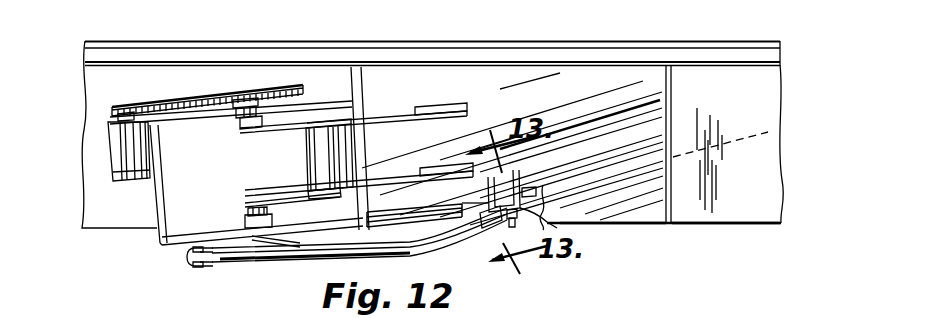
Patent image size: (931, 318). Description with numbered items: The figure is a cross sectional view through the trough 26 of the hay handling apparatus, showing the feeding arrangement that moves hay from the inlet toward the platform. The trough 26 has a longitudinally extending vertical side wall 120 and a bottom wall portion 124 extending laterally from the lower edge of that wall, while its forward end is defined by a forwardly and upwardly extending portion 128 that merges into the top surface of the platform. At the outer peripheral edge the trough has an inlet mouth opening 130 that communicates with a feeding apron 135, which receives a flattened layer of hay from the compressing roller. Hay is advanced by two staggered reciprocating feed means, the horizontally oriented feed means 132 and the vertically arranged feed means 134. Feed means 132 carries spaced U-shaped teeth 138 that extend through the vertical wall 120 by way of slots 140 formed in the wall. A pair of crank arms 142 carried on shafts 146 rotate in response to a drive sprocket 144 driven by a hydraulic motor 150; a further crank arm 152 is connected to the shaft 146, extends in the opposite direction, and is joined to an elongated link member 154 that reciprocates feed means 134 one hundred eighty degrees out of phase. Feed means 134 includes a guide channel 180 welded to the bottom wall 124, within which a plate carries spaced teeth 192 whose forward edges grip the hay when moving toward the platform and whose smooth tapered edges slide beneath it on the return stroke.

The trough 26 is at (568, 88).
The vertical side wall 120 is at (360, 91).
The bottom wall portion 124 is at (498, 240).
The forwardly and upwardly extending portion 128 is at (531, 108).
The inlet mouth opening 130 is at (683, 106).
The horizontally oriented feed means 132 is at (420, 102).
The vertically arranged feed means 134 is at (679, 309).
The feeding apron 135 is at (615, 226).
The U-shaped teeth 138 is at (441, 116).
The slots 140 is at (360, 127).
The crank arms 142 is at (268, 132).
The drive sprocket 144 is at (226, 93).
The shafts 146 is at (297, 243).
The hydraulic motor 150 is at (112, 163).
The further crank arm 152 is at (227, 259).
The elongated link member 154 is at (396, 257).
The guide channel 180 is at (535, 212).
The teeth 192 is at (522, 172).